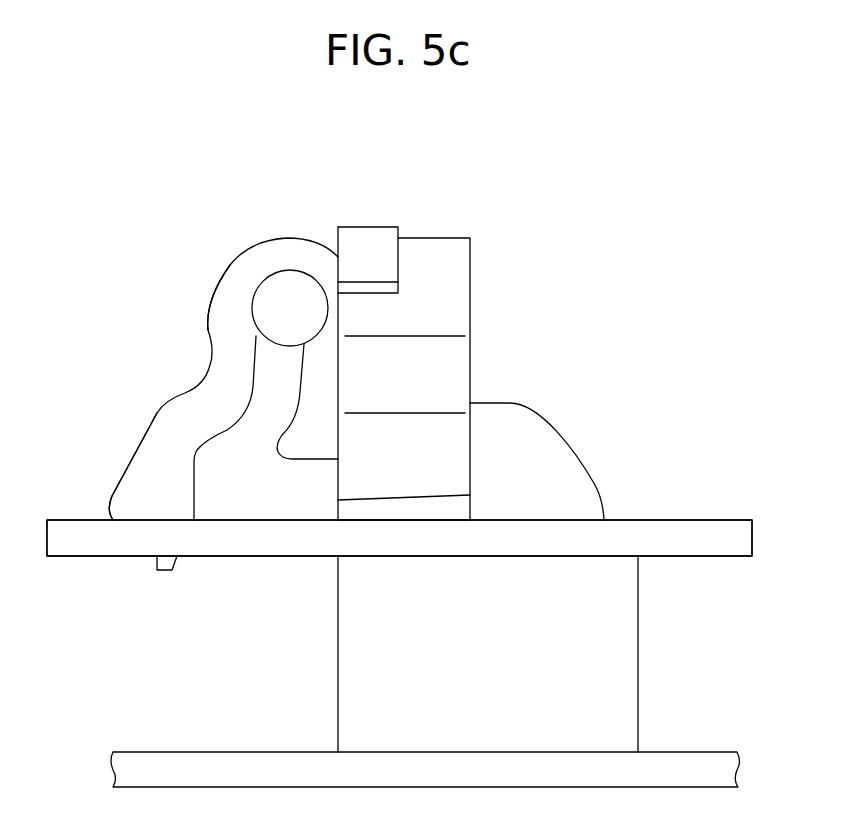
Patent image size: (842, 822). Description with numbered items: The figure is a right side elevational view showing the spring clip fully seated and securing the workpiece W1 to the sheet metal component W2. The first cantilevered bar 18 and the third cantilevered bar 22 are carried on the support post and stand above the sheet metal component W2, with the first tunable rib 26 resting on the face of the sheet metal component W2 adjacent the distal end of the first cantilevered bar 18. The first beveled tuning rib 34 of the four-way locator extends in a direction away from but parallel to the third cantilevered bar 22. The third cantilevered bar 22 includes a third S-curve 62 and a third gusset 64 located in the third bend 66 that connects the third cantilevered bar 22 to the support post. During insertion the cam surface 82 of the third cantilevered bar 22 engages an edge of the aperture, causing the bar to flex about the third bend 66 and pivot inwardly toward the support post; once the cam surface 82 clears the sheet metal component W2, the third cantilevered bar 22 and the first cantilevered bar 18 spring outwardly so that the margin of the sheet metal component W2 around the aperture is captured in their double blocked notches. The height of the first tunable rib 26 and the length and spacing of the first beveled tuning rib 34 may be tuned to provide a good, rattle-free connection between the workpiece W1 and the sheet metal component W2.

The first cantilevered bar 18 is at (440, 373).
The third cantilevered bar 22 is at (277, 247).
The first tunable rib 26 is at (553, 554).
The first beveled tuning rib 34 is at (528, 470).
The third S-curve 62 is at (190, 332).
The third gusset 64 is at (282, 323).
The third bend 66 is at (292, 270).
The cam surface 82 is at (133, 458).
The workpiece W1 is at (185, 752).
The sheet metal component W2 is at (703, 530).